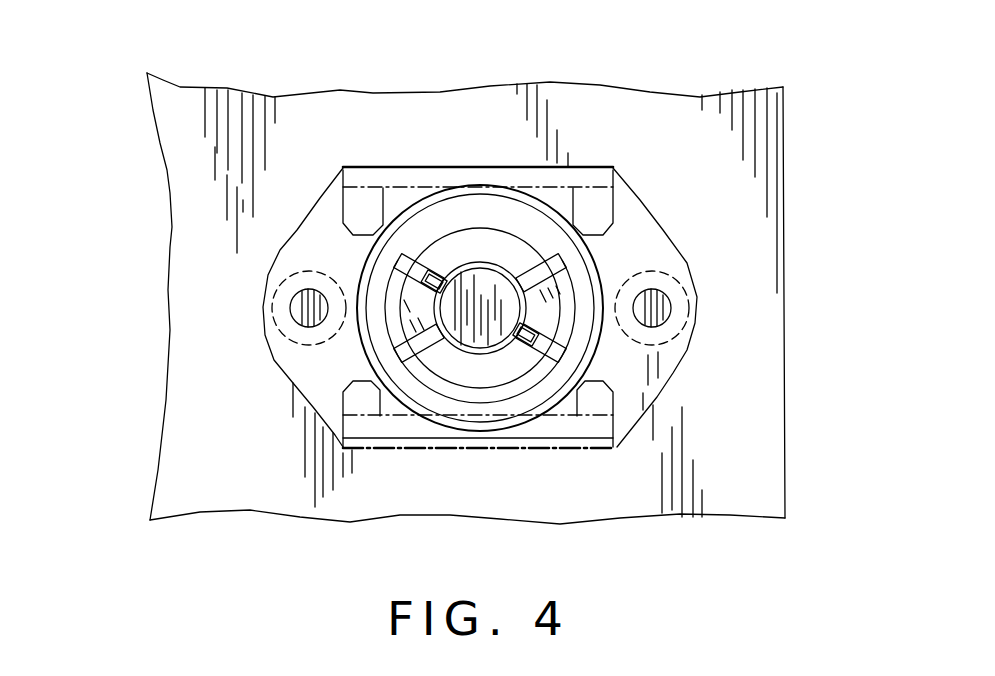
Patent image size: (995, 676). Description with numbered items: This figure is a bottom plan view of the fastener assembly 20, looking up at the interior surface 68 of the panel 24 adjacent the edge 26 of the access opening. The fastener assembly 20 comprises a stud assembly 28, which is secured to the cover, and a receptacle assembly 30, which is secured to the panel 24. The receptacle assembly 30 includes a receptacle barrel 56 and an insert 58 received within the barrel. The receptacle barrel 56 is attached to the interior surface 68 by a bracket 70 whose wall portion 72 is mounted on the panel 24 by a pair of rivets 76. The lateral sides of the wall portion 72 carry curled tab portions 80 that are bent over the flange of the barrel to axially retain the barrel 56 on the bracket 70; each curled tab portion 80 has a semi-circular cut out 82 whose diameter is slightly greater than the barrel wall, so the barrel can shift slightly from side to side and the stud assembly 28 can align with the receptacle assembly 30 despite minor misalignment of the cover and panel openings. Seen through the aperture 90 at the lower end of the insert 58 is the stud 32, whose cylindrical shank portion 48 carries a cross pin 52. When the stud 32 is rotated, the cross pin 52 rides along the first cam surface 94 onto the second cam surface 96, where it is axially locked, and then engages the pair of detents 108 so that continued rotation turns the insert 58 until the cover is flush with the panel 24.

The fastener assembly 20 is at (478, 236).
The panel 24 is at (470, 281).
The edge 26 is at (814, 302).
The stud assembly 28 is at (433, 413).
The receptacle assembly 30 is at (473, 236).
The stud 32 is at (711, 272).
The shank portion 48 is at (568, 444).
The cross pin 52 is at (254, 271).
The receptacle barrel 56 is at (355, 425).
The insert 58 is at (497, 224).
The interior surface 68 is at (425, 170).
The bracket 70 is at (682, 366).
The wall portion 72 is at (224, 307).
The rivets 76 is at (471, 324).
The curled tab portion 80 is at (628, 317).
The semi-circular cut out 82 is at (358, 300).
The aperture 90 is at (377, 377).
The first cam surface 94 is at (438, 175).
The second cam surface 96 is at (677, 406).
The detents 108 is at (681, 340).